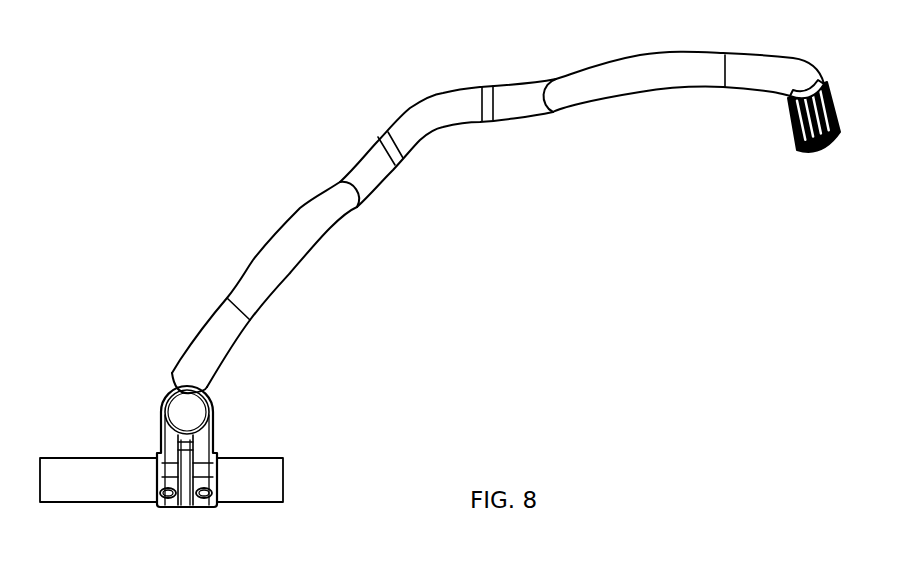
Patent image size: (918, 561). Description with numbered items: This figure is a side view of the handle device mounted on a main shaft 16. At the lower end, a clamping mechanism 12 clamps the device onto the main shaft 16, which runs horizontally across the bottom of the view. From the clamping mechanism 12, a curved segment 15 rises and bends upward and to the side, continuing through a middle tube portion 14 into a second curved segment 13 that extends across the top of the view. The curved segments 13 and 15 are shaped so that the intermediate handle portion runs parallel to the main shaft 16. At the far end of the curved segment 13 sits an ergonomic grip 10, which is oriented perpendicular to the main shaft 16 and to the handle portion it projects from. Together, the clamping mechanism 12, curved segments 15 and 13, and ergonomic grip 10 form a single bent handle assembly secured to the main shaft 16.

The ergonomic grip 10 is at (825, 166).
The clamping mechanism 12 is at (223, 418).
The curved segment 13 is at (650, 107).
The middle tube segment 14 is at (441, 145).
The curved segment 15 is at (306, 275).
The main shaft 16 is at (300, 473).